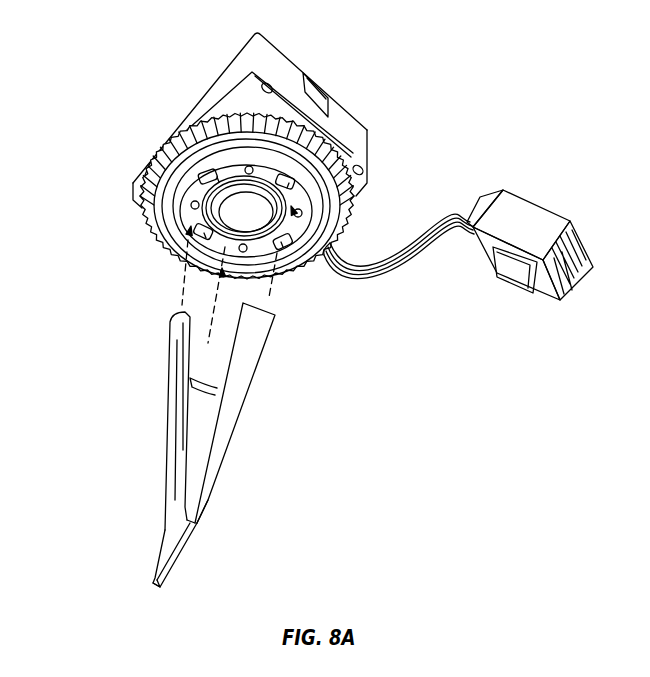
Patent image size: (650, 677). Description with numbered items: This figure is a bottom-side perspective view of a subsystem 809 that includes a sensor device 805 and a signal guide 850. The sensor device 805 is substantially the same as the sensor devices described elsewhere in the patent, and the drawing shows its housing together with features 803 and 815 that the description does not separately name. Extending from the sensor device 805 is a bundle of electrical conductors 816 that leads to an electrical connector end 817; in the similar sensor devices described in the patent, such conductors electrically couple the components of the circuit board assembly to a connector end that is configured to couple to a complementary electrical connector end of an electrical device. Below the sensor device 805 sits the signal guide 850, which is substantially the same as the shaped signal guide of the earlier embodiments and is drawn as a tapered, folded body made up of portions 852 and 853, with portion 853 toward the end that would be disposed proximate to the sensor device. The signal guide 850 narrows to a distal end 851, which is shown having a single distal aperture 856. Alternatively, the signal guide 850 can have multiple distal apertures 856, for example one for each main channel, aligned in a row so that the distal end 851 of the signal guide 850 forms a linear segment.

The subsystem 809 is at (478, 92).
The sensor device 805 is at (200, 62).
The housing tab 815 is at (290, 53).
The lens ring 803 is at (163, 147).
The cable 816 is at (437, 228).
The connector 817 is at (537, 208).
The signal guide 850 is at (108, 510).
The distal end 851 is at (152, 557).
The stake blade 852 is at (148, 425).
The stake blade 853 is at (152, 337).
The distal aperture 856 is at (163, 573).